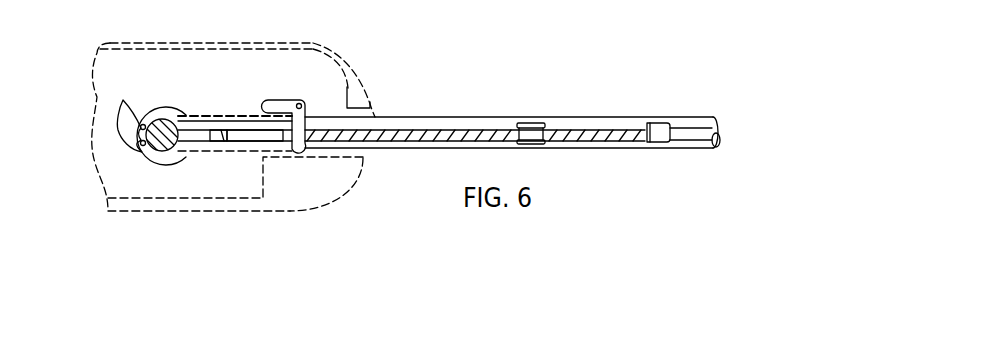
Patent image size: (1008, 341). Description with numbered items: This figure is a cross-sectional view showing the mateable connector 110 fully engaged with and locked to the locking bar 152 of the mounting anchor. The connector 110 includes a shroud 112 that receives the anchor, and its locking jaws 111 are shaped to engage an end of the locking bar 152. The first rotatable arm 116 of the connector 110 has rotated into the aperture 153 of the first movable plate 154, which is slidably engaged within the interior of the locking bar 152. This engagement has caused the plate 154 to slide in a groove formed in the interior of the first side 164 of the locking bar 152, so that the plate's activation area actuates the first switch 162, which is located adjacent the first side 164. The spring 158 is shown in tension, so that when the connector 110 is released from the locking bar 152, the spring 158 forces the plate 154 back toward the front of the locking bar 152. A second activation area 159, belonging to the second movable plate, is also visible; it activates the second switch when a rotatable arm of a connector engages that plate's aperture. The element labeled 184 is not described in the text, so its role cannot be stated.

The mateable connector 110 is at (280, 73).
The locking jaws 111 is at (123, 99).
The shroud 112 is at (213, 43).
The first rotatable arm 116 is at (297, 100).
The locking bar 152 is at (158, 119).
The aperture 153 is at (280, 137).
The first movable plate 154 is at (378, 116).
The spring 158 is at (695, 140).
The second activation area 159 is at (524, 124).
The first switch 162 is at (530, 125).
The first side 164 is at (603, 101).
The stop block 184 is at (657, 127).